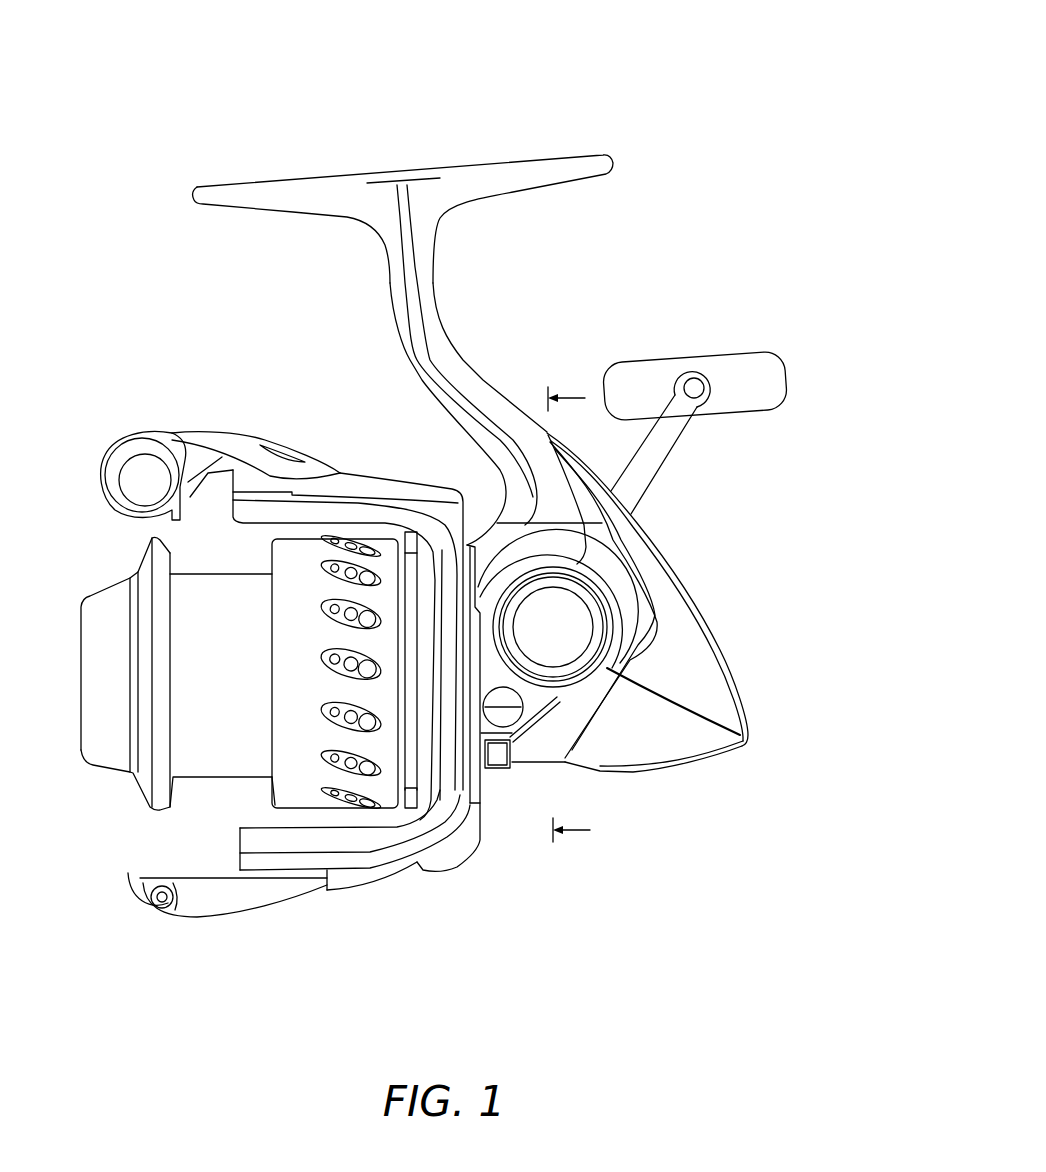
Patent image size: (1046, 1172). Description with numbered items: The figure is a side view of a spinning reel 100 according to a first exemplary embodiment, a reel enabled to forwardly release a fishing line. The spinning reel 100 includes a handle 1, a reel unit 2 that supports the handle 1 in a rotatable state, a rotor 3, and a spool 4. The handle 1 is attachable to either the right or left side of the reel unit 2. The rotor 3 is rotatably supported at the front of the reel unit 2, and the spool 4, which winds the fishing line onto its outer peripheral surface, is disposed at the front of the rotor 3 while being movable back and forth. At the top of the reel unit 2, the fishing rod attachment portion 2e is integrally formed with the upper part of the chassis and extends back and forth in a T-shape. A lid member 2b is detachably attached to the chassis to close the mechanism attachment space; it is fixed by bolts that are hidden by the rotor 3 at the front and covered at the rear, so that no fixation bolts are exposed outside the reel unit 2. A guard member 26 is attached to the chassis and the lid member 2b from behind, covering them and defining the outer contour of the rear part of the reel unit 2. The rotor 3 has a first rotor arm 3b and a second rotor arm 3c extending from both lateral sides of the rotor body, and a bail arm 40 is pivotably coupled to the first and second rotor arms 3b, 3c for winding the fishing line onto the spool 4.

The spinning reel 100 is at (524, 132).
The handle 1 is at (720, 357).
The reel unit 2 is at (524, 368).
The fishing rod attachment portion 2e is at (466, 352).
The lid member 2b is at (578, 713).
The guard member 26 is at (695, 613).
The rotor 3 is at (341, 458).
The first rotor arm 3b is at (366, 520).
The second rotor arm 3c is at (387, 835).
The spool 4 is at (188, 795).
The bail arm 40 is at (186, 424).